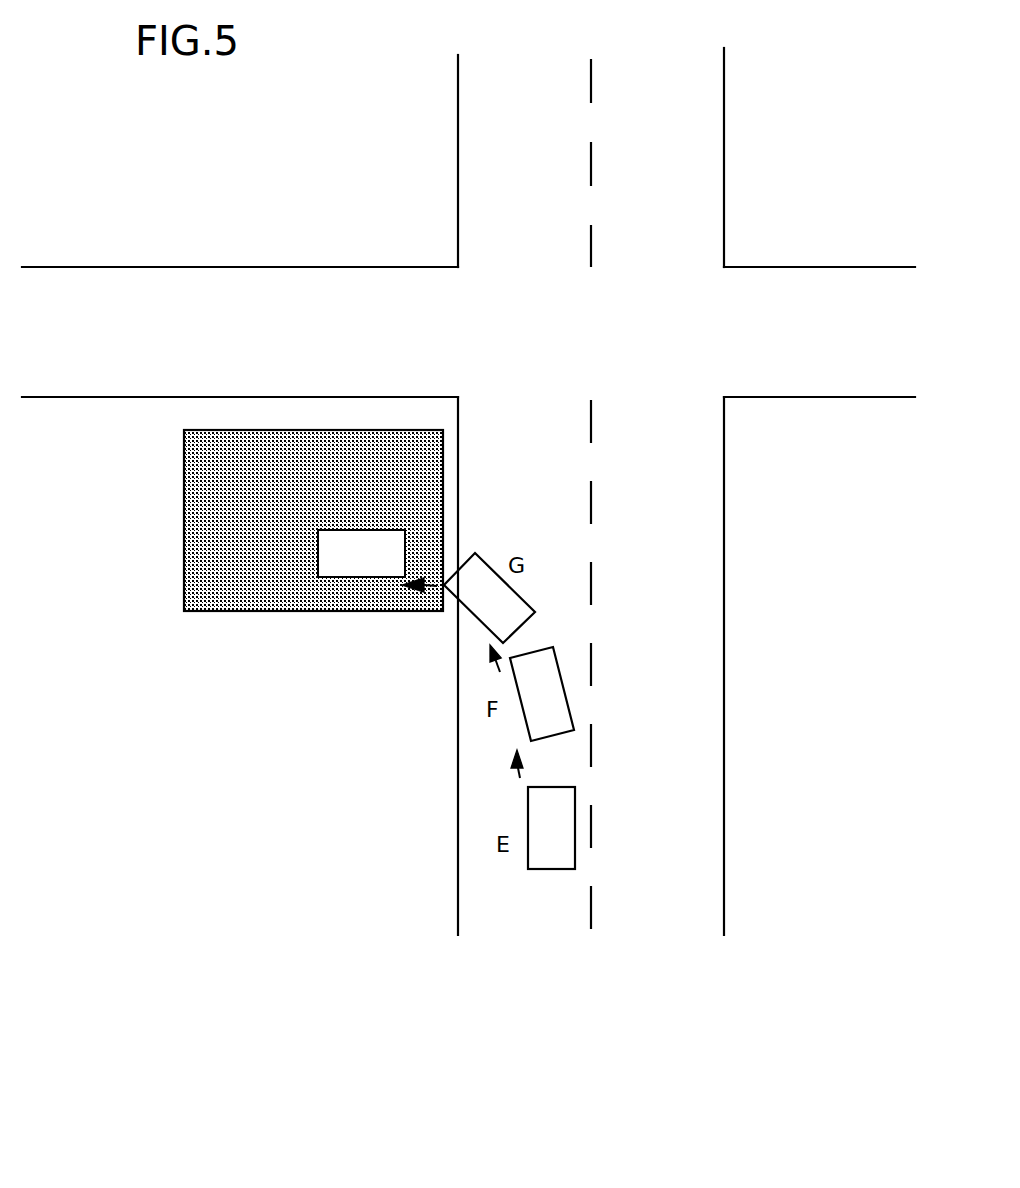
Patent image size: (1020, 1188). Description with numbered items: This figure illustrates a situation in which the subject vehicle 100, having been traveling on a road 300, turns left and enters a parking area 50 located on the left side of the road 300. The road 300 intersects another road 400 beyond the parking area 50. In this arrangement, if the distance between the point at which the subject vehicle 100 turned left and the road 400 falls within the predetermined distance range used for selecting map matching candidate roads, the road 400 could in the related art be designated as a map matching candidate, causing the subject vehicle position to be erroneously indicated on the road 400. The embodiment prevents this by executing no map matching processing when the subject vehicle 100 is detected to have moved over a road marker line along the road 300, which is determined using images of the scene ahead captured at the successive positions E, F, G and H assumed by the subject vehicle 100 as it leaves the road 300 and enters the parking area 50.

The road 400 is at (77, 412).
The road 300 is at (435, 902).
The parking area 50 is at (197, 605).
The subject vehicle 100 is at (575, 868).